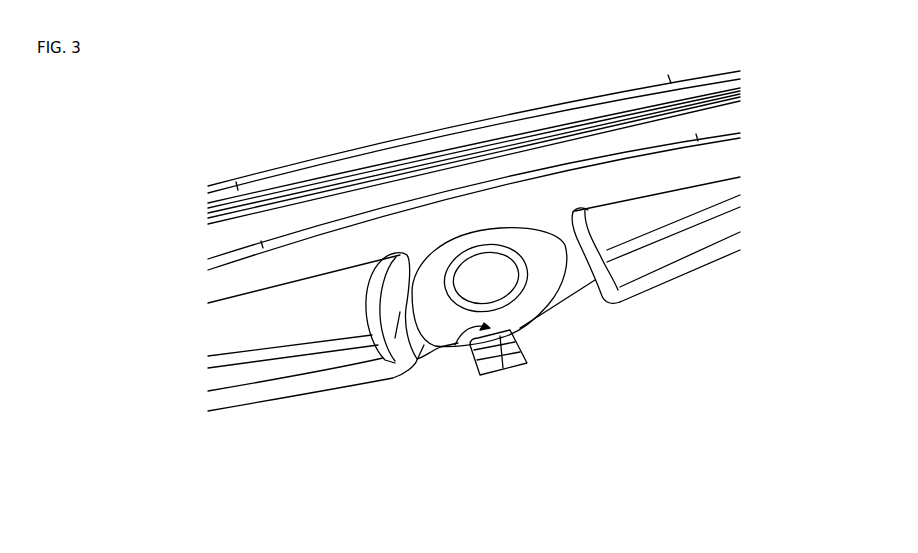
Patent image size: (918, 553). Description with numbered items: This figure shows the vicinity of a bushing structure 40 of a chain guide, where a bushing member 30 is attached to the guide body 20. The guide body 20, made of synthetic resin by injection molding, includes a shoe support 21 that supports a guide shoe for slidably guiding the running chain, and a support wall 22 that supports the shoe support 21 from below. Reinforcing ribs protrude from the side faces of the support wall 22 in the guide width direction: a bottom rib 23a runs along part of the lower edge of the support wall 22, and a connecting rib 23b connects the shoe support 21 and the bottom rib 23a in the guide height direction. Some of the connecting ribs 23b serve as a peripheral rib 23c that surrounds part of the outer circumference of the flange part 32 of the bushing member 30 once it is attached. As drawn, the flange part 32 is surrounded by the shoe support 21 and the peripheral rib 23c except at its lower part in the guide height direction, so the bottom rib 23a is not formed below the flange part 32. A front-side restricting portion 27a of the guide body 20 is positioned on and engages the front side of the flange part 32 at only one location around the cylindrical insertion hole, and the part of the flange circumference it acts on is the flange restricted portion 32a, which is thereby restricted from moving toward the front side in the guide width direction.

The guide body 20 is at (620, 141).
The shoe support 21 is at (362, 257).
The support wall 22 is at (310, 305).
The bottom rib 23a is at (293, 393).
The connecting rib 23b is at (518, 337).
The peripheral rib 23c is at (403, 313).
The front-side restricting portion 27a is at (507, 335).
The bushing member 30 is at (511, 218).
The flange part 32 is at (489, 182).
The flange restricted portion 32a is at (455, 345).
The bushing structure 40 is at (478, 229).